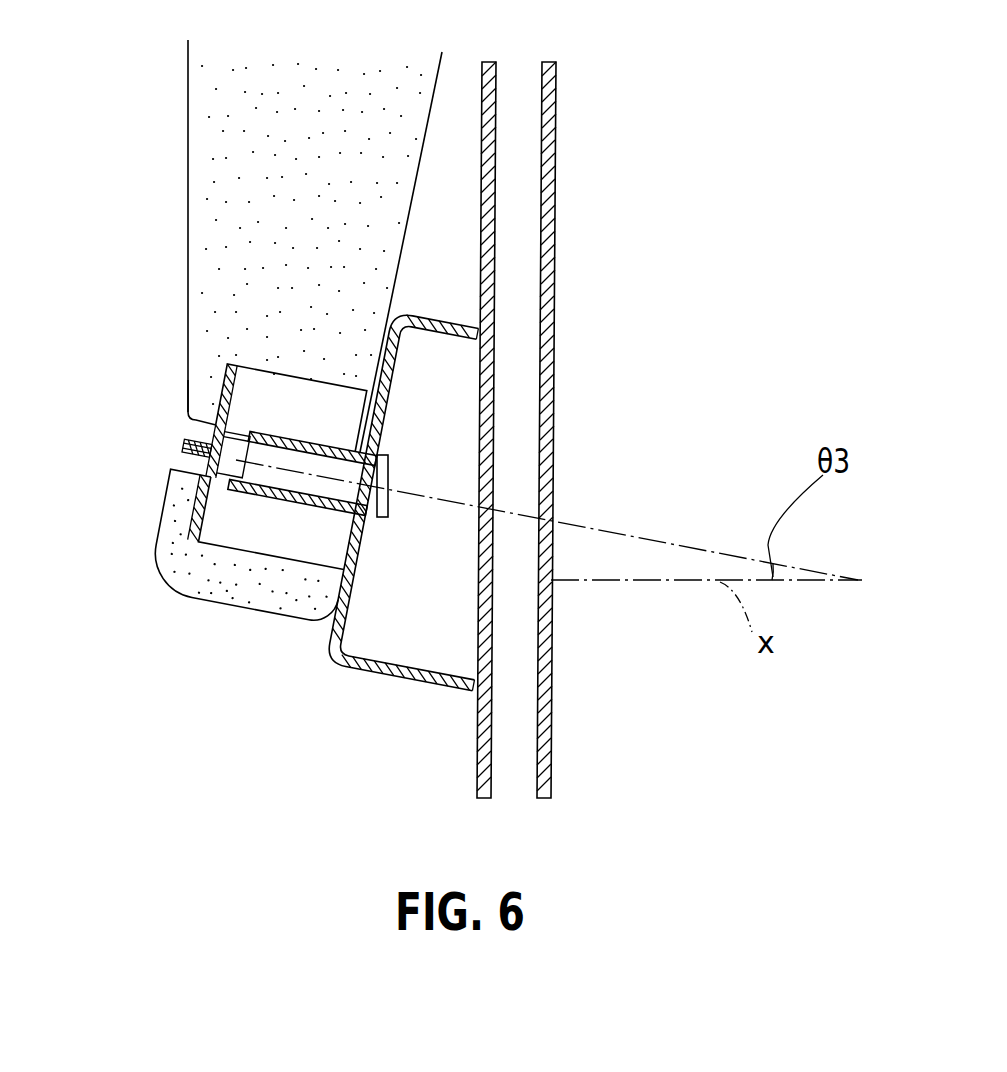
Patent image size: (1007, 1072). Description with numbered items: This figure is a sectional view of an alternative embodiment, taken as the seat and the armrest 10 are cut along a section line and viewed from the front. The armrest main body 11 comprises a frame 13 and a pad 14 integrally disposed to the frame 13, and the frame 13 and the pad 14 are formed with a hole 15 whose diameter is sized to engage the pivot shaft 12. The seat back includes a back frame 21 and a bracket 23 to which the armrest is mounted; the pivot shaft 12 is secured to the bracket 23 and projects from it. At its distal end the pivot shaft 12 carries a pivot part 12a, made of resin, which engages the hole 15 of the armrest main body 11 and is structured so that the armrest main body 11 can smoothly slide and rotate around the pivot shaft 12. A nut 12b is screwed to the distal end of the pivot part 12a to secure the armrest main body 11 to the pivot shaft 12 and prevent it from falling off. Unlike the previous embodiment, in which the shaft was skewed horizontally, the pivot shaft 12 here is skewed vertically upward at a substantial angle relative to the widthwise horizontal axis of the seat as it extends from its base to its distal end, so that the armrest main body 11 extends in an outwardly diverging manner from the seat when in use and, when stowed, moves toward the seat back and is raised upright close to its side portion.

The armrest 10 is at (248, 232).
The armrest main body 11 is at (187, 388).
The pivot shaft 12 is at (270, 480).
The pivot part 12a is at (180, 478).
The nut 12b is at (195, 461).
The frame 13 is at (227, 378).
The pad 14 is at (203, 201).
The hole 15 is at (172, 429).
The back frame 21 is at (558, 142).
The bracket 23 is at (392, 682).